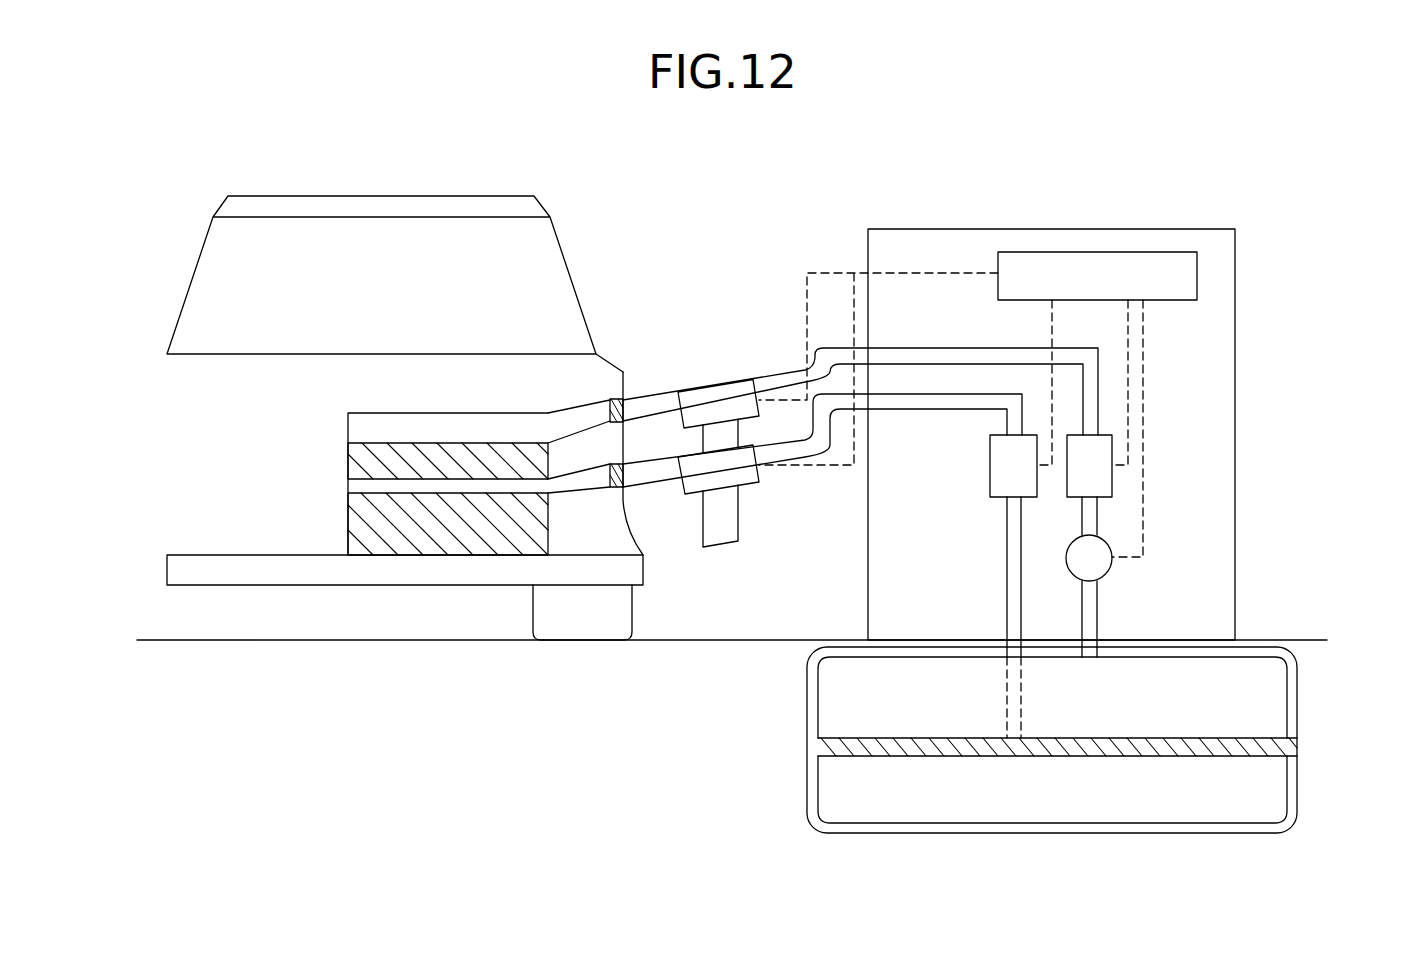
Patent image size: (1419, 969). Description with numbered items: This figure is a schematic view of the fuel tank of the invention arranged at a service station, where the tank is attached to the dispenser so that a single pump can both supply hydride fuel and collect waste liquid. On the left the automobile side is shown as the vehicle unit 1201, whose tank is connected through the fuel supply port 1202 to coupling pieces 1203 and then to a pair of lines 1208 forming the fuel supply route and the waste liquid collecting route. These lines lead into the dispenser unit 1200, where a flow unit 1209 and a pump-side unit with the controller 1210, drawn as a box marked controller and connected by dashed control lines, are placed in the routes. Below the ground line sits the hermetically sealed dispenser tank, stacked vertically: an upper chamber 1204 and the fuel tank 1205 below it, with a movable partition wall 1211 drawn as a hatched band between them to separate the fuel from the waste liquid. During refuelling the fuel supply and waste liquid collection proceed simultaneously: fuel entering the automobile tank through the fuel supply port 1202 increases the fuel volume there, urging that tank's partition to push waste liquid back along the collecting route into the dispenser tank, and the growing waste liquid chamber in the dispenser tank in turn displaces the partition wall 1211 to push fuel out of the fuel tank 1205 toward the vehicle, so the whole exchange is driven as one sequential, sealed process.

The liquid supply unit 1200 is at (957, 228).
The recording head unit 1201 is at (617, 490).
The fuel supply port 1202 is at (615, 397).
The joint 1203 is at (716, 384).
The tank 1204 is at (1268, 700).
The fuel tank 1205 is at (1110, 570).
The tubes 1208 is at (783, 372).
The valve 1209 is at (990, 467).
The controller 1210 is at (1097, 251).
The movable partition wall 1211 is at (826, 748).